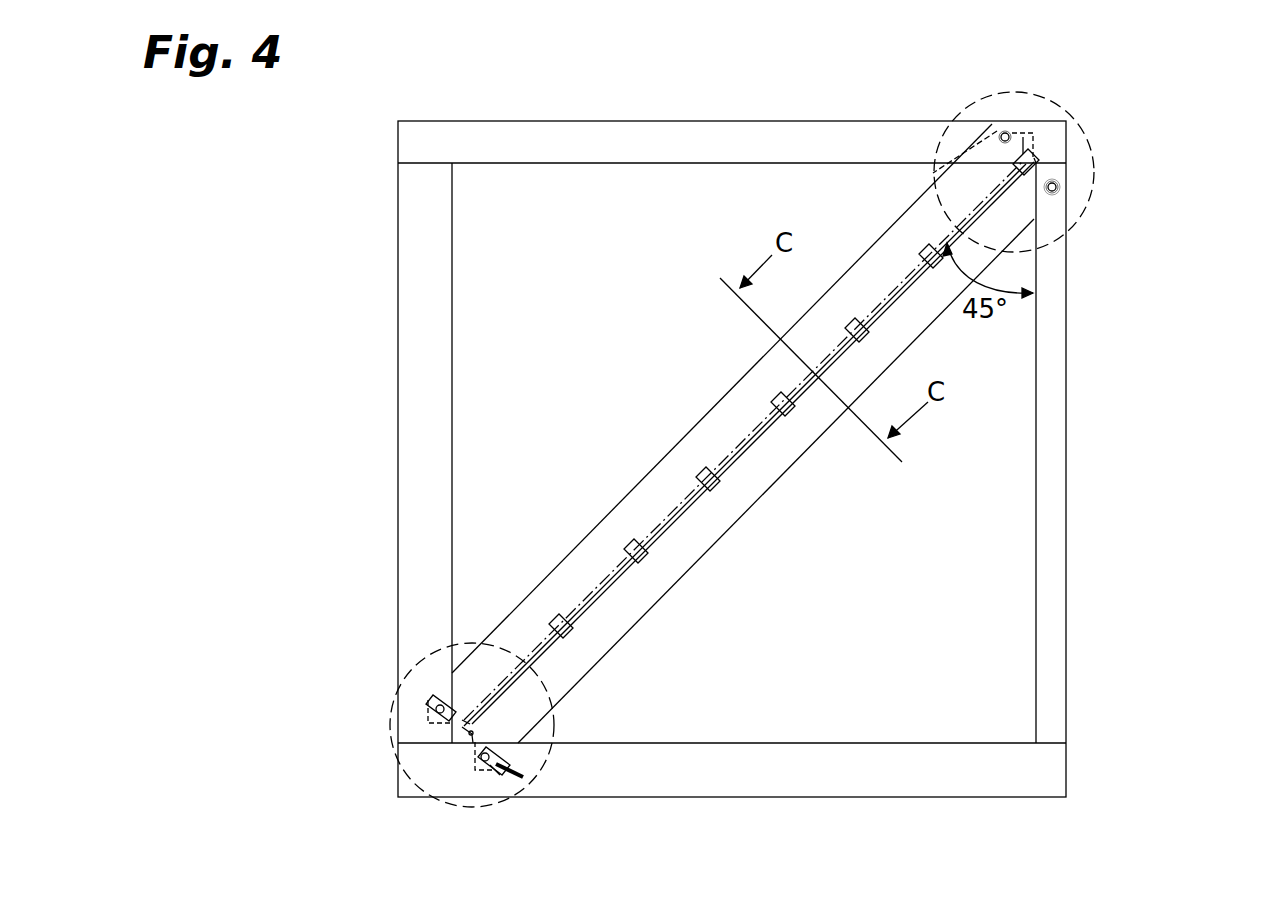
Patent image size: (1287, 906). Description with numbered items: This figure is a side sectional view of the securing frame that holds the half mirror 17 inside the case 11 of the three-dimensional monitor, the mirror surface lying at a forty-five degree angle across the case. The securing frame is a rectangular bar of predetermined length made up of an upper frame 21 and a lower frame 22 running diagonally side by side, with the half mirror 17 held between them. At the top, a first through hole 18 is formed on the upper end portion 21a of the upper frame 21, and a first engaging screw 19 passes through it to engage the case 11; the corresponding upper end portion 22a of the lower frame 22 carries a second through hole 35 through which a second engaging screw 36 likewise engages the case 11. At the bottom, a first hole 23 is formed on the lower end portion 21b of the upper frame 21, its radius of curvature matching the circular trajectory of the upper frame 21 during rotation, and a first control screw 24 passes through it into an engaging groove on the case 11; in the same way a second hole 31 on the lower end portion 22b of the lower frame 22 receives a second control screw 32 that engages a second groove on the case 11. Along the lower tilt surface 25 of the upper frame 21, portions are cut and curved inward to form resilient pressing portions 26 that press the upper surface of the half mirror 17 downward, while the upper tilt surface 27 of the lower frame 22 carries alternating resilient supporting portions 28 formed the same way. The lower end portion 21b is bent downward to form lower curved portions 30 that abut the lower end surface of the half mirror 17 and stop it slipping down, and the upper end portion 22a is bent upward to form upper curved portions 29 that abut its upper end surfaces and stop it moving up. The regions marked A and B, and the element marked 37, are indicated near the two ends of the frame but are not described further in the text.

The case 11 is at (543, 147).
The half mirror 17 is at (608, 520).
The first through hole 18 is at (1009, 133).
The first engaging screw 19 is at (1003, 133).
The upper frame 21 is at (862, 290).
The upper end portion of the upper frame 21a is at (1032, 158).
The lower end portion of the upper frame 21b is at (447, 722).
The lower frame 22 is at (673, 563).
The upper end portion of the lower frame 22a is at (1034, 158).
The lower end portion of the lower frame 22b is at (485, 763).
The first hole 23 is at (436, 706).
The first control screw 24 is at (433, 710).
The lower tilt surface 25 is at (590, 603).
The resilient pressing portions 26 is at (533, 652).
The upper tilt surface 27 is at (680, 515).
The resilient supporting portions 28 is at (753, 453).
The upper curved portions 29 is at (1052, 176).
The lower curved portions 30 is at (452, 735).
The second hole 31 is at (492, 756).
The second control screw 32 is at (495, 767).
The second through hole 35 is at (1057, 187).
The second engaging screw 36 is at (1052, 191).
The pin 37 is at (432, 700).
The detail A is at (397, 752).
The detail B is at (1090, 150).